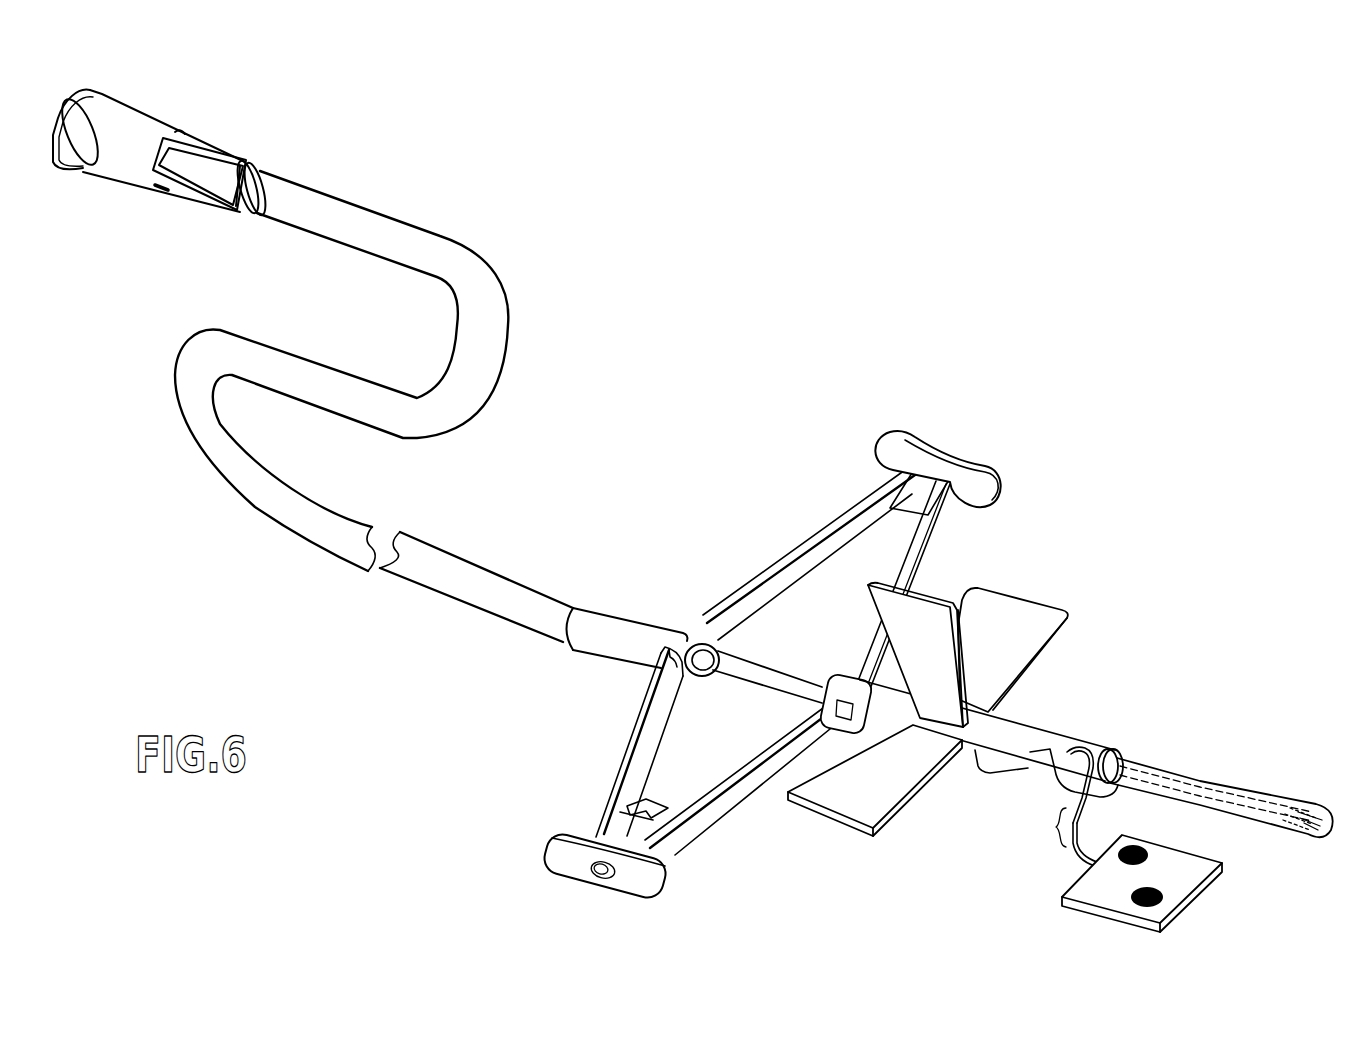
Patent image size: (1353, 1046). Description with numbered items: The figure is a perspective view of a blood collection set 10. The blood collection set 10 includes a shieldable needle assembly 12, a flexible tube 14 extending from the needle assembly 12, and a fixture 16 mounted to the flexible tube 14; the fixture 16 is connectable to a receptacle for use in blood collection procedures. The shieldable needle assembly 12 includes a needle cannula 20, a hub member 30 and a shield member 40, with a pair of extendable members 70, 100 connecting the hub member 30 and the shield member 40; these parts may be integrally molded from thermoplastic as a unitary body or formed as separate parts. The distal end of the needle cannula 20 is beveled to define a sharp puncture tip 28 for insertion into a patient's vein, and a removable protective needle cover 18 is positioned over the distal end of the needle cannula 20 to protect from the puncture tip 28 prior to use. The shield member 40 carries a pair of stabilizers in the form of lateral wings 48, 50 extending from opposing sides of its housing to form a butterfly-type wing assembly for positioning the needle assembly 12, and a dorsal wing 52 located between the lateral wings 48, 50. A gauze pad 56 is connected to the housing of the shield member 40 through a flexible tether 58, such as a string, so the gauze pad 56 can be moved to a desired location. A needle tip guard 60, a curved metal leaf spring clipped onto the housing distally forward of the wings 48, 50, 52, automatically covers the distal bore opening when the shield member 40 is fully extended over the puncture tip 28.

The blood collection set 10 is at (212, 597).
The shieldable needle assembly 12 is at (1030, 548).
The flexible tube 14 is at (392, 242).
The fixture 16 is at (117, 125).
The removable protective needle cover 18 is at (1320, 803).
The needle cannula 20 is at (1170, 770).
The puncture tip 28 is at (1330, 838).
The hub member 30 is at (627, 630).
The shield member 40 is at (1023, 733).
The lateral wing 48 is at (898, 790).
The lateral wing 50 is at (1043, 620).
The dorsal wing 52 is at (940, 588).
The gauze pad 56 is at (1193, 868).
The tether 58 is at (1083, 843).
The needle tip guard 60 is at (1018, 775).
The extendable member 70 is at (635, 745).
The extendable member 100 is at (807, 547).